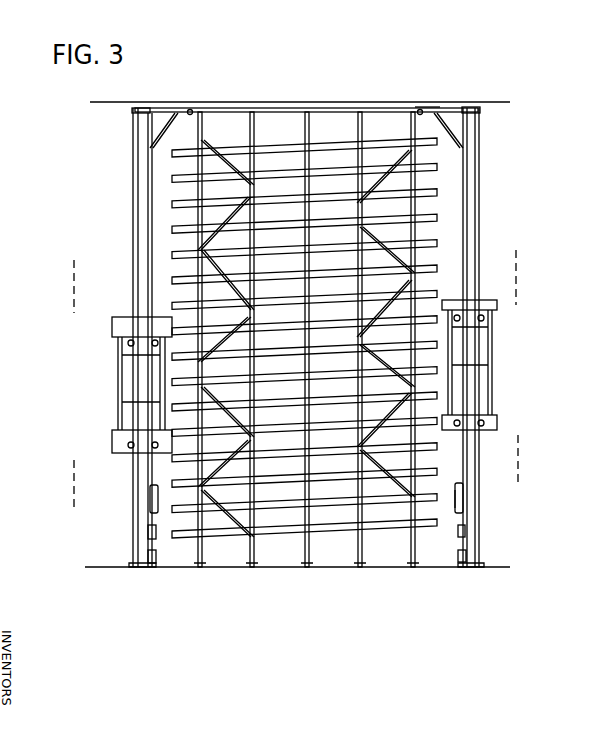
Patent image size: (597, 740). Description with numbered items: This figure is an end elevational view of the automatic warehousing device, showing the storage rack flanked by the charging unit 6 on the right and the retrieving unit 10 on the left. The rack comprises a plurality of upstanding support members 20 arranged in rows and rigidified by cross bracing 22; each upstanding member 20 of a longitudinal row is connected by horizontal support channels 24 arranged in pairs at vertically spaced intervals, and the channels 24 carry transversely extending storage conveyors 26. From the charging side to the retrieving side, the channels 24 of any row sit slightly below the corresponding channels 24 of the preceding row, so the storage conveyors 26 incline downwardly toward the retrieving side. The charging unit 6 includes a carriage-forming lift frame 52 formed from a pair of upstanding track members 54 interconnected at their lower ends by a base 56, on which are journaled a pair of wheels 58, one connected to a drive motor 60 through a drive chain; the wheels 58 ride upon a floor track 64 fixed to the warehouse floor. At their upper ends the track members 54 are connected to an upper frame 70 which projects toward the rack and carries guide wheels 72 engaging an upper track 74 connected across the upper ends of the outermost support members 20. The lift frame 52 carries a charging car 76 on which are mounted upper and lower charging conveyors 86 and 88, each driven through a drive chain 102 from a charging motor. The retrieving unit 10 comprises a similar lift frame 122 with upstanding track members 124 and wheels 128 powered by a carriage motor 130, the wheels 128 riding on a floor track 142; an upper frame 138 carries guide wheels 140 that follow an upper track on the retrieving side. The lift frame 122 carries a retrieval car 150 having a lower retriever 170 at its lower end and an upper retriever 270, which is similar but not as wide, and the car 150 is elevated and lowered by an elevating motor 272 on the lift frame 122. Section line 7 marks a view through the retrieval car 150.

The charging unit 6 is at (528, 290).
The section line 7- 7 is at (64, 295).
The retrieving unit 10 is at (100, 403).
The upstanding support members 20 is at (198, 212).
The cross bracing 22 is at (230, 109).
The horizontal support channels 24 is at (255, 148).
The storage conveyors 26 is at (340, 137).
The lift frame 52 is at (488, 197).
The upstanding track members 54 is at (479, 157).
The base 56 is at (463, 497).
The wheels 58 is at (466, 552).
The drive motor 60 is at (465, 532).
The floor track 64 is at (470, 565).
The upper frame 70 is at (456, 107).
The guide wheels 72 is at (421, 110).
The upper track 74 is at (414, 110).
The charging car 76 is at (495, 343).
The upper charging conveyor 86 is at (497, 305).
The lower charging conveyor 88 is at (495, 417).
The drive chain 102 is at (460, 503).
The lift frame 122 is at (126, 230).
The upstanding track members 124 is at (137, 172).
The wheels 128 is at (147, 555).
The carriage motor 130 is at (147, 533).
The upper frame 138 is at (162, 110).
The guide wheels 140 is at (191, 110).
The floor track 142 is at (147, 568).
The retrieval car 150 is at (117, 355).
The lower retriever 170 is at (113, 432).
The upper retriever 270 is at (113, 330).
The elevating motor 272 is at (150, 500).